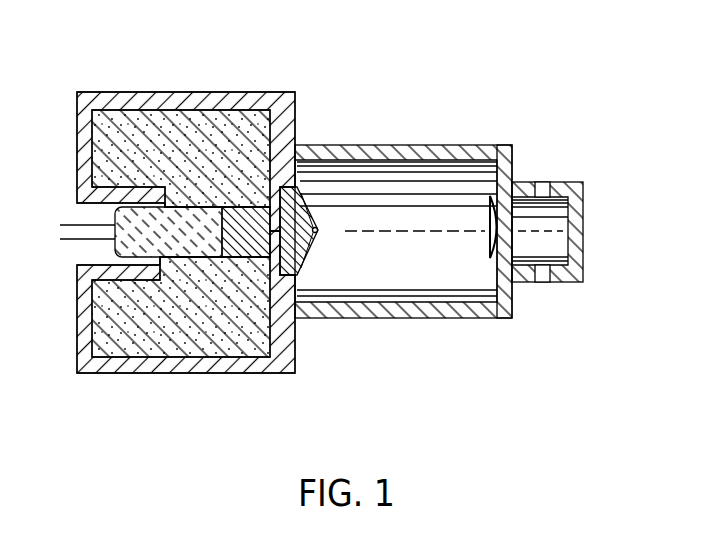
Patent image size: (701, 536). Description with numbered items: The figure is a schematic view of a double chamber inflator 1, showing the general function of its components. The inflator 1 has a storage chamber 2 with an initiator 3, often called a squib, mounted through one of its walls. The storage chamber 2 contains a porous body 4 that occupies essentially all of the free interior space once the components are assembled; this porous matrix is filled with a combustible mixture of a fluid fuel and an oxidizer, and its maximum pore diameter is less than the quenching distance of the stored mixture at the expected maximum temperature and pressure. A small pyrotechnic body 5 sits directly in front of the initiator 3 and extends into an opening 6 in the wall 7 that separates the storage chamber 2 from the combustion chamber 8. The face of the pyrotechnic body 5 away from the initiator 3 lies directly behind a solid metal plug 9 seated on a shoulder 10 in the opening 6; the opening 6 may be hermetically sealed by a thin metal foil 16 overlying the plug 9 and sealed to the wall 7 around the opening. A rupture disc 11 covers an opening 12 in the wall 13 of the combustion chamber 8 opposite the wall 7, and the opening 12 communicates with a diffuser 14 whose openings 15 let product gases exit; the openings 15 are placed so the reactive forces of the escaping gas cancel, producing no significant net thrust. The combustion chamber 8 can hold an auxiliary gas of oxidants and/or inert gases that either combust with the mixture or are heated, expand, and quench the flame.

The inflator 1 is at (127, 74).
The storage chamber 2 is at (165, 342).
The initiator 3 is at (113, 247).
The porous body 4 is at (83, 93).
The pyrotechnic body 5 is at (241, 240).
The opening 6 is at (300, 195).
The wall 7 is at (293, 365).
The combustion chamber 8 is at (445, 175).
The solid metal plug 9 is at (316, 228).
The shoulder 10 is at (290, 315).
The rupture disc 11 is at (490, 232).
The opening 12 is at (503, 250).
The wall 13 is at (505, 170).
The diffuser 14 is at (565, 235).
The openings 15 is at (545, 183).
The thin metal foil 16 is at (305, 264).